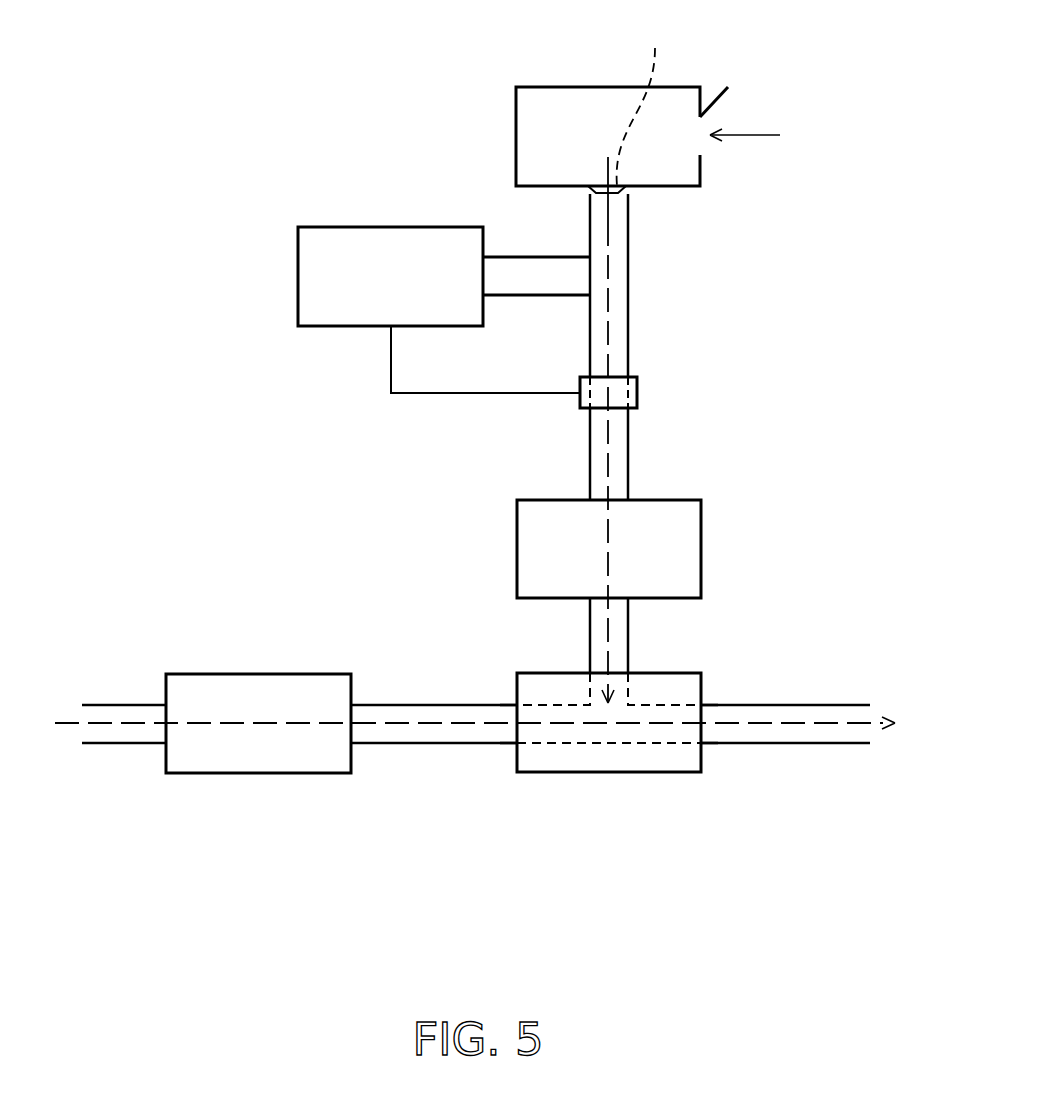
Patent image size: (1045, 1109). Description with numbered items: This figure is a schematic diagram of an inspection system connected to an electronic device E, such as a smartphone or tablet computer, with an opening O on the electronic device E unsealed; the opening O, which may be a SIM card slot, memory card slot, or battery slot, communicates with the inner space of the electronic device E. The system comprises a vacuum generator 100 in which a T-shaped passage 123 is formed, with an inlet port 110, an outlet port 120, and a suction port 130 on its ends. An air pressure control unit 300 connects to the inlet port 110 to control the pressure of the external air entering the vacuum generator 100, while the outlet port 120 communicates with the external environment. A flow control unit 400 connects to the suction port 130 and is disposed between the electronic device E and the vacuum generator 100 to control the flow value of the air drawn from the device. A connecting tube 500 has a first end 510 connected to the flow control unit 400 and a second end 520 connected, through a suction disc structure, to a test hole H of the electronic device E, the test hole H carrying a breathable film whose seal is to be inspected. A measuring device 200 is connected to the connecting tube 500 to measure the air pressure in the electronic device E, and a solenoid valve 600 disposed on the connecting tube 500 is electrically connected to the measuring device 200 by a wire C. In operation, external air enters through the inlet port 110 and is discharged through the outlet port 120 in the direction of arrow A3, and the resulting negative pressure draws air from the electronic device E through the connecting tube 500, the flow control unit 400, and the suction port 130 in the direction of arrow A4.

The vacuum generator 100 is at (565, 774).
The inlet port 110 is at (513, 730).
The outlet port 120 is at (702, 728).
The T-shaped passage 123 is at (657, 744).
The suction port 130 is at (617, 672).
The measuring device 200 is at (297, 278).
The air pressure control unit 300 is at (260, 774).
The flow control unit 400 is at (702, 548).
The connecting tube 500 is at (629, 312).
The first end 510 is at (600, 477).
The second end 520 is at (624, 190).
The solenoid valve 600 is at (638, 393).
The arrow A3 is at (845, 726).
The arrow A4 is at (612, 275).
The wire C is at (391, 360).
The electronic device E is at (514, 137).
The test hole H is at (642, 99).
The opening O is at (701, 147).